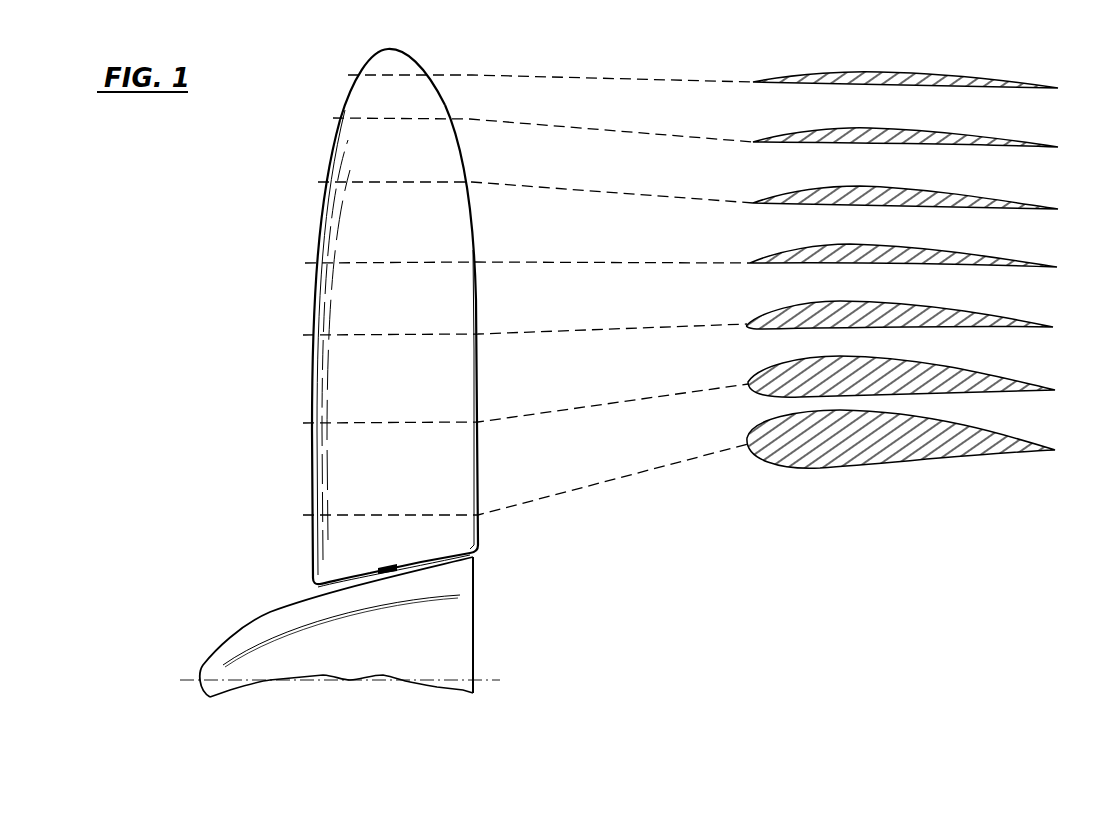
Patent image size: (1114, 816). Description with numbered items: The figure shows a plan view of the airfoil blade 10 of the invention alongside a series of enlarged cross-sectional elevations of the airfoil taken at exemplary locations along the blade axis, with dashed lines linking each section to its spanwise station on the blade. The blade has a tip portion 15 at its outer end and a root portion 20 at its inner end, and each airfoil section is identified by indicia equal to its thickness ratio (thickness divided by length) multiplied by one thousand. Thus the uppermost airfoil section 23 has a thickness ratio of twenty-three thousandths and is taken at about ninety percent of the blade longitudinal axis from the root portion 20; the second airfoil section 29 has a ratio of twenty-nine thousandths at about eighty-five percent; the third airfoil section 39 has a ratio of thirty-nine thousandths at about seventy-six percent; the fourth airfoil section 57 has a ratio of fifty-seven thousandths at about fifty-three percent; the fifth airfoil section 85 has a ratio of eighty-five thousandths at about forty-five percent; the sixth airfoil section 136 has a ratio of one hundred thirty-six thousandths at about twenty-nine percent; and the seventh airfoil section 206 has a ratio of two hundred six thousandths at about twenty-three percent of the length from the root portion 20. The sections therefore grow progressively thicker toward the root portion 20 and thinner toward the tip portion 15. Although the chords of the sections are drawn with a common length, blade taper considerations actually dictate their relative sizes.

The airfoil blade 10 is at (238, 336).
The tip portion 15 is at (346, 58).
The root portion 20 is at (298, 576).
The uppermost airfoil section 23 is at (1046, 83).
The second airfoil section 29 is at (1046, 142).
The third airfoil section 39 is at (1046, 202).
The fourth airfoil section 57 is at (1046, 262).
The fifth airfoil section 85 is at (1046, 322).
The sixth airfoil section 136 is at (1046, 382).
The seventh airfoil section 206 is at (1046, 444).